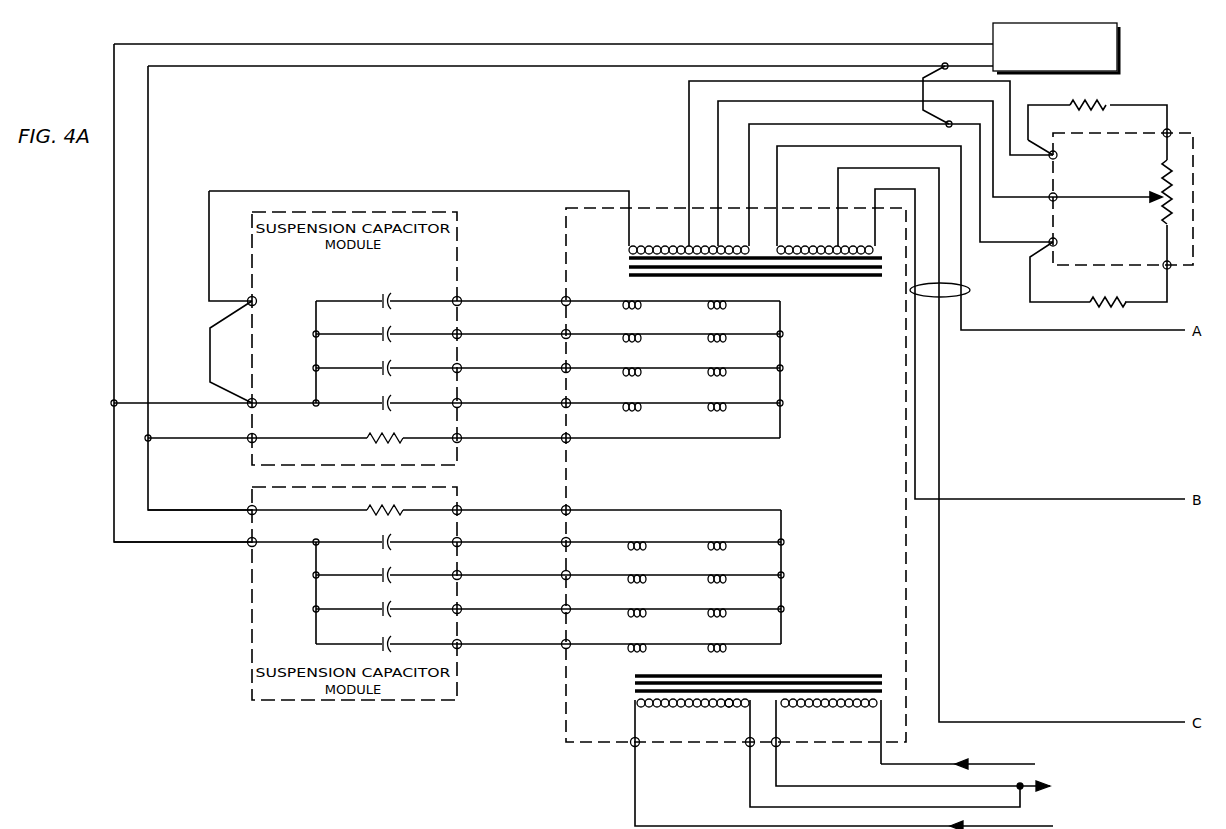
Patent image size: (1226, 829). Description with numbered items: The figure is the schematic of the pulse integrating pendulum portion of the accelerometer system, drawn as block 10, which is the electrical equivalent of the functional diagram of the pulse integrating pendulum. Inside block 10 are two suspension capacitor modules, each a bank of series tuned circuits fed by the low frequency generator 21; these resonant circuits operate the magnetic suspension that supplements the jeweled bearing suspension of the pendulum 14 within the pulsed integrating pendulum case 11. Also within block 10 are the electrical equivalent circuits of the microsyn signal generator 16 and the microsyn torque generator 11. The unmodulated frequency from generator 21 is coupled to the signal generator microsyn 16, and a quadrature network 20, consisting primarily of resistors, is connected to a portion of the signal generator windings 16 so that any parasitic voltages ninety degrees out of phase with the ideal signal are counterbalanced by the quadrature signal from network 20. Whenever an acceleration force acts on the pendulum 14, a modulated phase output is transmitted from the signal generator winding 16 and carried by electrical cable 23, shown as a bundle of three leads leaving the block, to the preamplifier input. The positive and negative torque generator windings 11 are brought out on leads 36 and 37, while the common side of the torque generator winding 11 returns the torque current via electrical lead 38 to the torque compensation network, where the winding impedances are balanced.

The block 10 is at (576, 210).
The torque generator 11 is at (703, 729).
The pulse integrating pendulum 14 is at (837, 479).
The signal generator 16 is at (647, 222).
The quadrature network 20 is at (1127, 105).
The low frequency generator 21 is at (1122, 32).
The electrical cable 23 is at (965, 288).
The torque generator output lead 36 is at (975, 826).
The torque generator output lead 37 is at (976, 763).
The electrical lead 38 is at (968, 786).